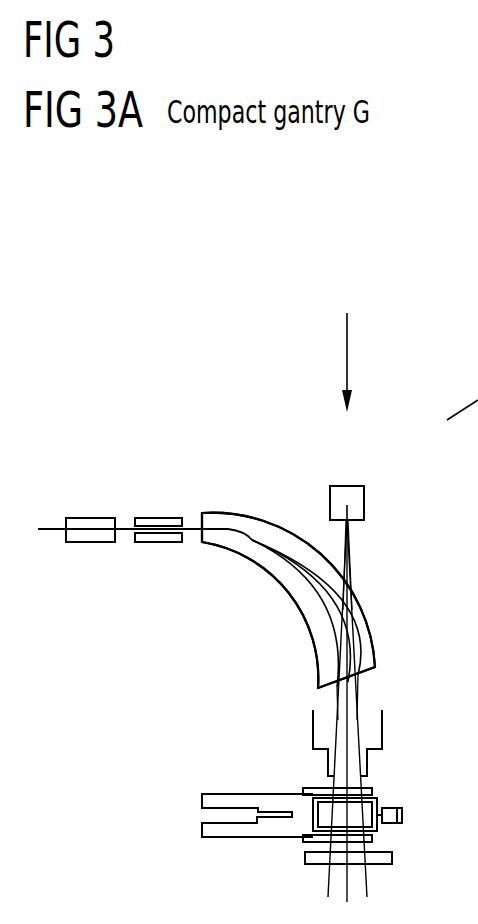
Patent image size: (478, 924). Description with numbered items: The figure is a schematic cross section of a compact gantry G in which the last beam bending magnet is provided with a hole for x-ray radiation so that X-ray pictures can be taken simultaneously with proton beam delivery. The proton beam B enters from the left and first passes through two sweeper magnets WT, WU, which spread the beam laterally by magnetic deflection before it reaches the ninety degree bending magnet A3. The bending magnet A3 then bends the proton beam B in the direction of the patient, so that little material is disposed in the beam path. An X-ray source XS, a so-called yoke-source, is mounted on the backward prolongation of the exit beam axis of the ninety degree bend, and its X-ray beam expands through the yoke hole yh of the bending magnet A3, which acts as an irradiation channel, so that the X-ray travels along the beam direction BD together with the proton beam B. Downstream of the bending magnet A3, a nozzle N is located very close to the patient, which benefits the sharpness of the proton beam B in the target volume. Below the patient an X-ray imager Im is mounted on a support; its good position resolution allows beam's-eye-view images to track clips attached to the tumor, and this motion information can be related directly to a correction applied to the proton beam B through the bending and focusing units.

The compact gantry G is at (148, 470).
The proton beam B is at (50, 531).
The sweeper magnet WT is at (88, 542).
The sweeper magnet WU is at (153, 542).
The 90° bending magnet A3 is at (267, 520).
The beam direction BD is at (345, 353).
The X-ray source XS is at (365, 503).
The X-ray beam X-ray is at (352, 570).
The yoke hole yh is at (357, 617).
The nozzle N is at (382, 725).
The X-ray imager Im is at (392, 857).